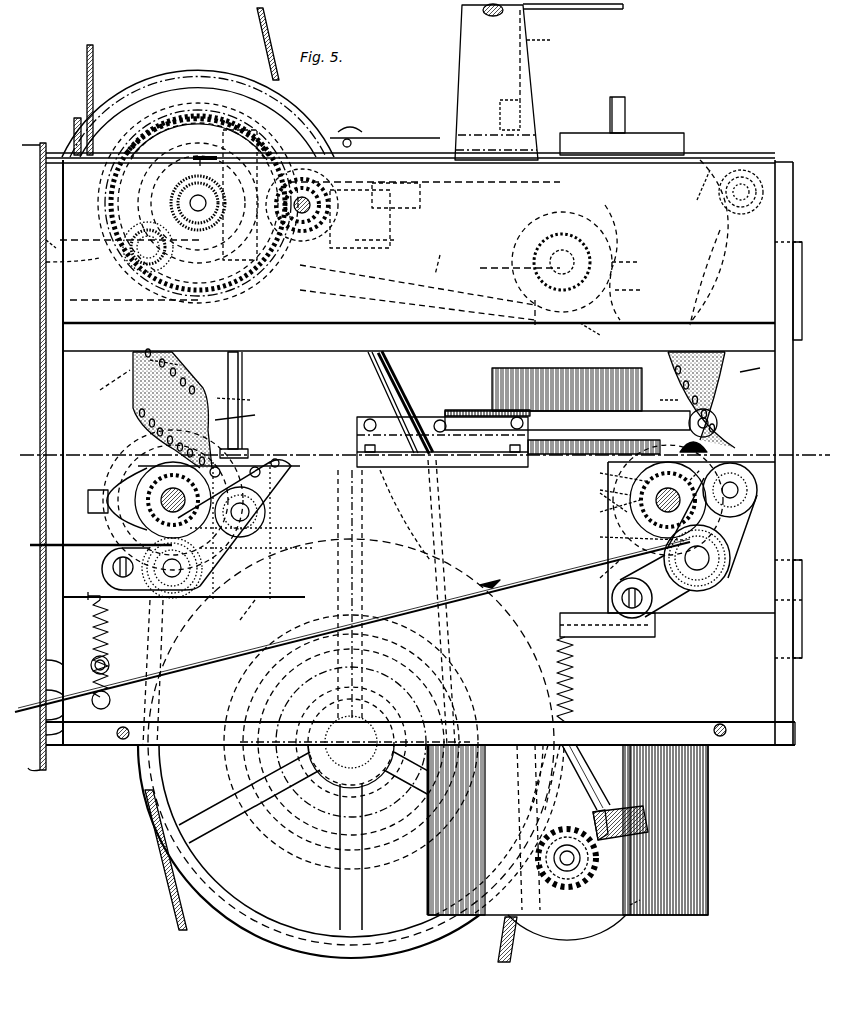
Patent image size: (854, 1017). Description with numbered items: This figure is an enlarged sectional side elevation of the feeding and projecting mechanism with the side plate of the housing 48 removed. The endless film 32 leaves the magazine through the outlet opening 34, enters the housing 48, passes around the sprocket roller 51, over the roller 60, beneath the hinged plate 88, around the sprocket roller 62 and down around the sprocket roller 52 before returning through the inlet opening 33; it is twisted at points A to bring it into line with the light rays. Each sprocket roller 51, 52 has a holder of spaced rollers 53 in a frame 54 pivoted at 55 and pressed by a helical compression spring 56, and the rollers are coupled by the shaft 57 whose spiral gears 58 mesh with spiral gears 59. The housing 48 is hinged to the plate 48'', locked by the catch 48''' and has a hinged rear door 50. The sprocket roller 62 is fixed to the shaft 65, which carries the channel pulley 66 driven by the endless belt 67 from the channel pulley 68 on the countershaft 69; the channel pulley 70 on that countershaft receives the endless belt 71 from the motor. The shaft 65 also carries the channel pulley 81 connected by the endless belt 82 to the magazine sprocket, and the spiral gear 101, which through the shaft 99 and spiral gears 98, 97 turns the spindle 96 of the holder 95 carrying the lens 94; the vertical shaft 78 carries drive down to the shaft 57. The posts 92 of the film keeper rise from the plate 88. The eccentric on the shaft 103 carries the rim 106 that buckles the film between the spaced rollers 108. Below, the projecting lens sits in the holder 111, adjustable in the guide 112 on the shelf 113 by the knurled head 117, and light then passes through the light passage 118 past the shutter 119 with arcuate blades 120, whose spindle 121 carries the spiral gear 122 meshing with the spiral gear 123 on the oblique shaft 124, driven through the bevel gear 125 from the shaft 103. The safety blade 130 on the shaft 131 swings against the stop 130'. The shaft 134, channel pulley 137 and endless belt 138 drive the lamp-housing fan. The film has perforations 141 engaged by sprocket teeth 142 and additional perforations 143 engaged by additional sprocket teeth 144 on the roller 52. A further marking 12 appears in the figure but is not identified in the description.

The center line 12 is at (803, 448).
The film 32 is at (352, 559).
The inlet opening 33 is at (46, 548).
The outlet opening 34 is at (39, 700).
The housing 48 is at (724, 162).
The plate 48'' is at (37, 240).
The catch or keeper 48''' is at (190, 149).
The hinged rear door 50 is at (755, 365).
The sprocket roller 51 is at (160, 515).
The sprocket roller 52 is at (145, 495).
The rollers 53 is at (220, 570).
The frame 54 is at (265, 512).
The pivot 55 is at (113, 567).
The helical compression spring 56 is at (110, 650).
The shaft 57 is at (405, 515).
The spiral gears 58 is at (430, 594).
The spiral gears 59 is at (607, 509).
The roller 60 is at (726, 247).
The sprocket roller 62 is at (230, 220).
The shaft 65 is at (190, 200).
The channel pulley 66 is at (182, 58).
The endless belt 67 is at (105, 387).
The channel pulley 68 is at (305, 805).
The countershaft 69 is at (330, 830).
The channel pulley 70 is at (268, 940).
The endless belt 71 is at (185, 922).
The vertical shaft 78 is at (246, 380).
The channel pulley 81 is at (199, 123).
The endless belt 82 is at (86, 78).
The plate 88 is at (622, 144).
The posts 92 is at (608, 113).
The lens 94 is at (640, 261).
The holder 95 is at (666, 241).
The spindle 96 is at (639, 290).
The spiral gear 97 is at (520, 212).
The spiral gear 98 is at (601, 333).
The shaft 99 is at (441, 257).
The spiral gear 101 is at (168, 175).
The shaft 103 is at (312, 198).
The rim or sleeve 106 is at (212, 282).
The spaced rollers 108 is at (352, 126).
The sleeve or holder 111 is at (567, 389).
The guide 112 is at (435, 478).
The shelf 113 is at (567, 432).
The knurled head 117 is at (710, 450).
The light passage 118 is at (690, 790).
The shutter 119 is at (605, 930).
The arcuate blades 120 is at (614, 903).
The spindle 121 is at (565, 872).
The spiral gear 122 is at (583, 866).
The spiral gear 123 is at (648, 835).
The obliquely disposed shaft 124 is at (400, 383).
The bevel gear 125 is at (392, 205).
The blade 130 is at (571, 52).
The stop 130' is at (555, 43).
The shaft 131 is at (493, 17).
The shaft 134 is at (394, 235).
The channel pulley 137 is at (59, 268).
The endless belt 138 is at (74, 135).
The perforations 141 is at (163, 435).
The sprocket teeth 142 is at (598, 488).
The perforations 143 is at (265, 435).
The additional sprocket teeth 144 is at (641, 504).
The points A is at (480, 382).